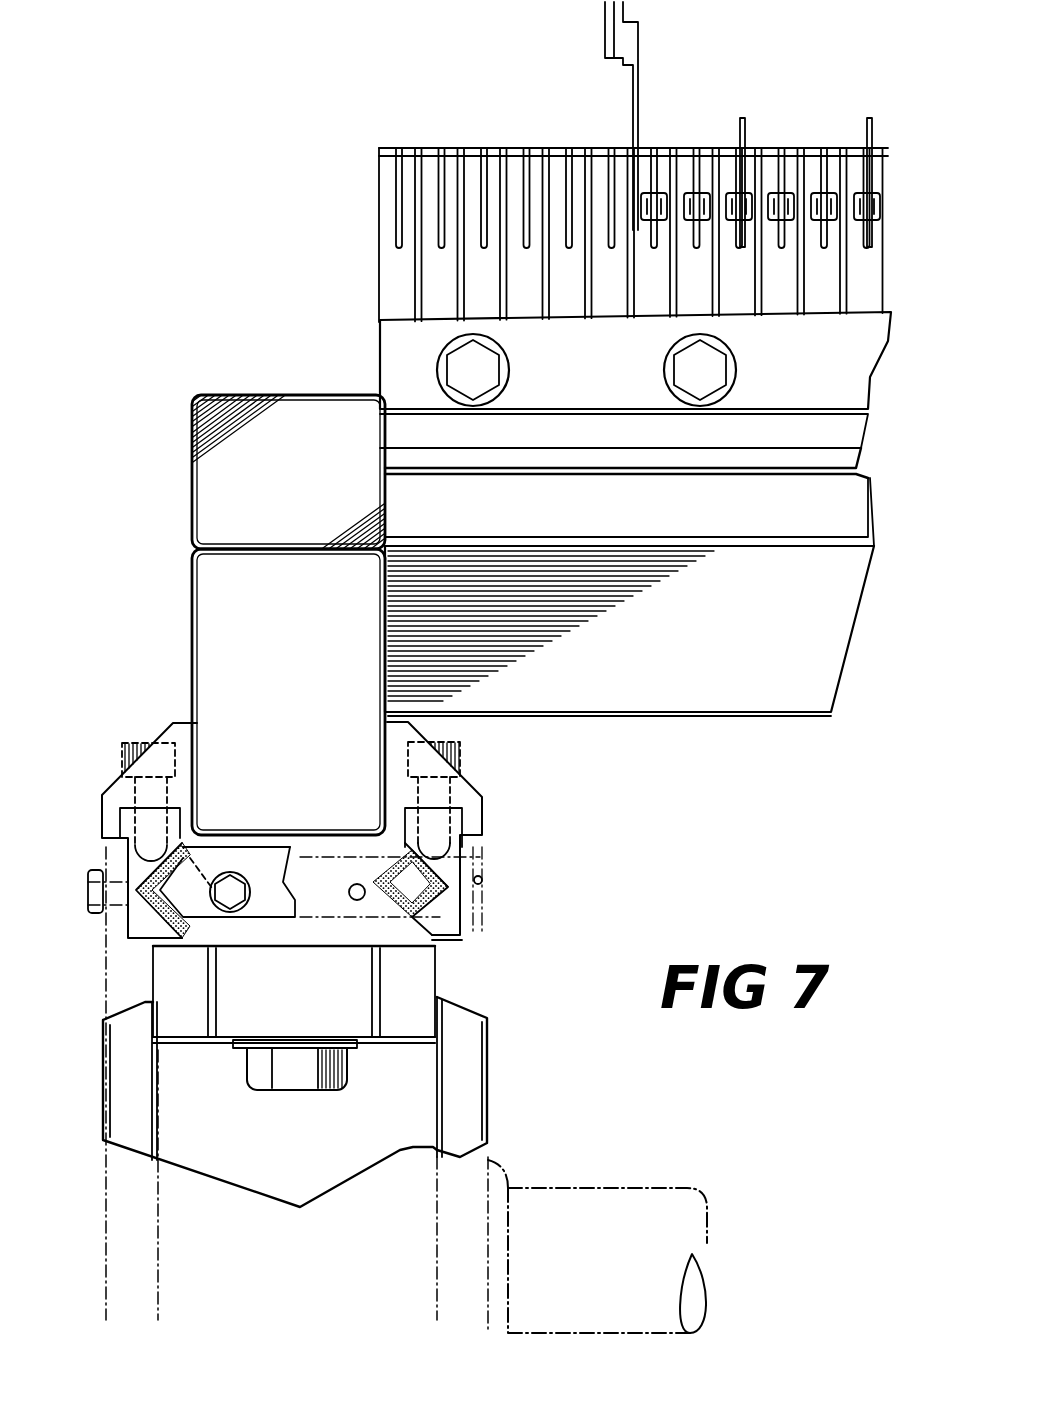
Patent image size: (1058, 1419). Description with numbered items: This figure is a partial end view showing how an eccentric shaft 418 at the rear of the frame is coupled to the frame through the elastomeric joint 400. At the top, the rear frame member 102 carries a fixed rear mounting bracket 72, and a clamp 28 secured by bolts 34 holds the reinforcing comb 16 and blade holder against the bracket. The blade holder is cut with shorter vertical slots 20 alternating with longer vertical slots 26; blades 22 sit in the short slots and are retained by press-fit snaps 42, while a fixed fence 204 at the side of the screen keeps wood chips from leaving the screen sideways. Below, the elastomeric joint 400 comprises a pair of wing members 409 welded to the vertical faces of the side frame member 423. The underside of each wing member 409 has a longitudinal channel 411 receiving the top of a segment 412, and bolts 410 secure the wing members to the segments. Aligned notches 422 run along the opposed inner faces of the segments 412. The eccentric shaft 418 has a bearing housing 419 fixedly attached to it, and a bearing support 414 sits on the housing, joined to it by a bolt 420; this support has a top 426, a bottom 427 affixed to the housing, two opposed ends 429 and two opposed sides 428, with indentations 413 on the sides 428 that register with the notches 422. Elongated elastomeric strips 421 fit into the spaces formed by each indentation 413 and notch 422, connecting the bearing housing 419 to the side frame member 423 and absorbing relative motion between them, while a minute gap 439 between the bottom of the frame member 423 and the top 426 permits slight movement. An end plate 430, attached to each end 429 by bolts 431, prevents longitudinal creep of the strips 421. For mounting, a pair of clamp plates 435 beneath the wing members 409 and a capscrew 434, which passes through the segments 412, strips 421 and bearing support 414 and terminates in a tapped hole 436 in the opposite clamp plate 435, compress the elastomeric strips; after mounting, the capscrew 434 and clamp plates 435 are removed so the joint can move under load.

The reinforcing comb 16 is at (452, 147).
The vertical slots 20 is at (528, 147).
The longer vertical slots 26 is at (593, 147).
The blades 22 is at (869, 118).
The press-fit snaps 42 is at (712, 192).
The fixed fence 204 is at (640, 90).
The clamp 28 is at (848, 378).
The bolts 34 is at (668, 376).
The rear mounting bracket 72 is at (625, 455).
The rear frame member 102 is at (757, 690).
The side frame member 423 is at (266, 405).
The top of bearing support 426 is at (358, 846).
The wing members 409 is at (398, 762).
The bolts 410 is at (462, 750).
The longitudinal channel 411 is at (430, 813).
The segments 412 is at (398, 795).
The elastomeric strips 421 is at (415, 855).
The notches 422 is at (455, 925).
The minute gap 439 is at (258, 847).
The end plate 430 is at (337, 828).
The bolts 431 is at (232, 895).
The indentations 413 is at (407, 910).
The capscrew 434 is at (87, 897).
The clamp plates 435 is at (122, 930).
The tapped hole 436 is at (482, 880).
The elastomeric joint 400 is at (500, 893).
The bottom of bearing support 427 is at (300, 950).
The ends of bearing support 429 is at (320, 950).
The sides of bearing support 428 is at (437, 945).
The bearing support 414 is at (402, 942).
The bearing housing 419 is at (280, 1177).
The bolt 420 is at (300, 1077).
The eccentric shaft 418 is at (580, 1190).